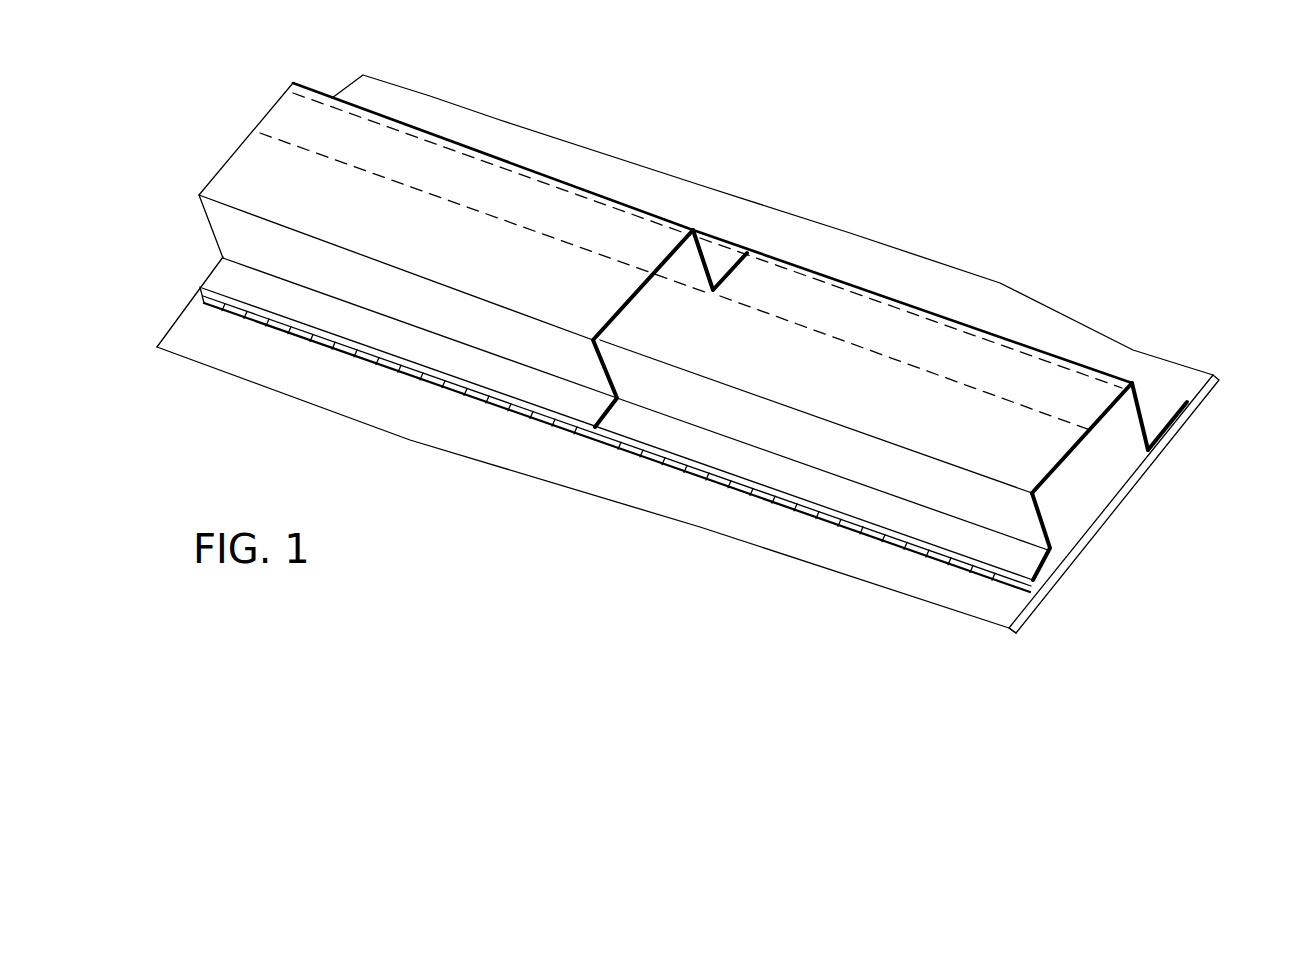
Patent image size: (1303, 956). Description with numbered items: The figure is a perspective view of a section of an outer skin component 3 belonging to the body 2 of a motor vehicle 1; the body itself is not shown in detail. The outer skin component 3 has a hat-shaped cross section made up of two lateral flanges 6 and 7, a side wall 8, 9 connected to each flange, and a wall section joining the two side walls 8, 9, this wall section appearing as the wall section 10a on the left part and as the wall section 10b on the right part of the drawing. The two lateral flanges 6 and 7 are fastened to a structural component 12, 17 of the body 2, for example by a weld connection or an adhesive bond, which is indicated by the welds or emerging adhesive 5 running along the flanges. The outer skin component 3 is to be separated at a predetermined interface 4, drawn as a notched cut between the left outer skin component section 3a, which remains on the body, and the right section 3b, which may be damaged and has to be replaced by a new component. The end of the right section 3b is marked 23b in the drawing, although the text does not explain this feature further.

The motor vehicle 1 is at (852, 228).
The body 2 is at (688, 354).
The outer skin component 3 is at (263, 117).
The outer skin component section 3a is at (620, 233).
The right section of the outer skin component 3b is at (945, 353).
The interface 4 is at (740, 253).
The emerging adhesive 5 is at (850, 528).
The lateral flange 6 is at (985, 538).
The lateral flange 7 is at (1153, 413).
The side wall 8 is at (1050, 520).
The side wall 9 is at (1138, 418).
The wall section 10a is at (432, 272).
The second profile piece 10b is at (782, 398).
The structural component 12 is at (733, 512).
The sheet surface region 17 is at (688, 354).
The end face of second profile piece 23b is at (1117, 423).